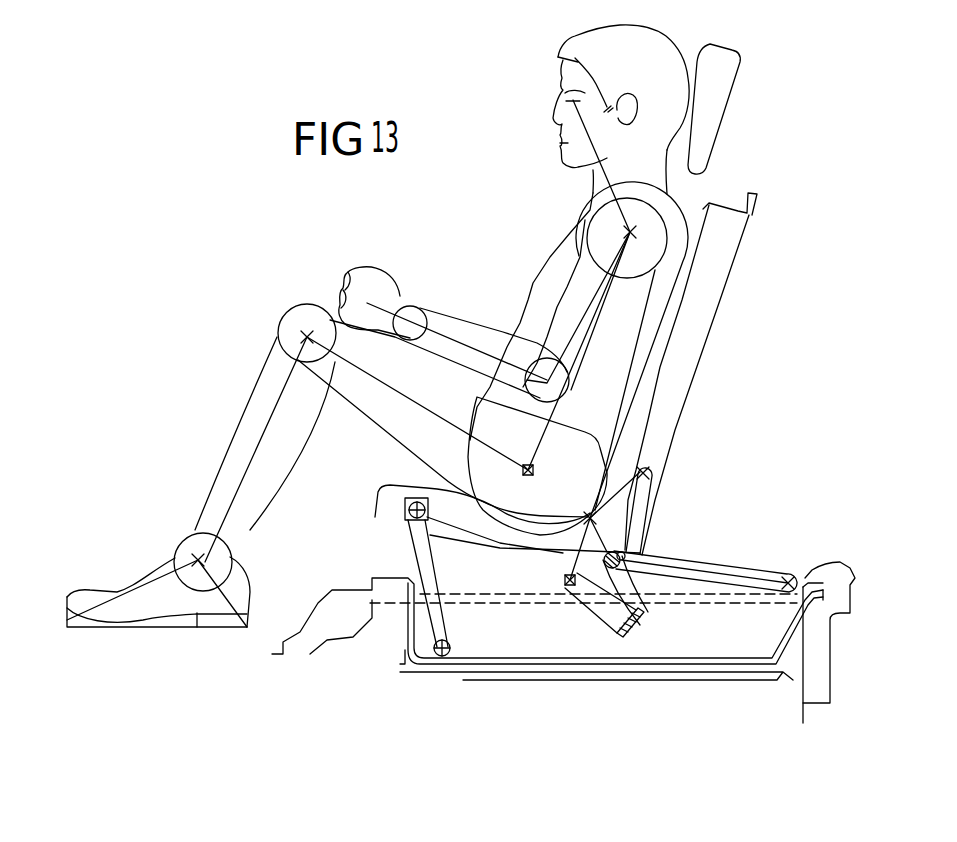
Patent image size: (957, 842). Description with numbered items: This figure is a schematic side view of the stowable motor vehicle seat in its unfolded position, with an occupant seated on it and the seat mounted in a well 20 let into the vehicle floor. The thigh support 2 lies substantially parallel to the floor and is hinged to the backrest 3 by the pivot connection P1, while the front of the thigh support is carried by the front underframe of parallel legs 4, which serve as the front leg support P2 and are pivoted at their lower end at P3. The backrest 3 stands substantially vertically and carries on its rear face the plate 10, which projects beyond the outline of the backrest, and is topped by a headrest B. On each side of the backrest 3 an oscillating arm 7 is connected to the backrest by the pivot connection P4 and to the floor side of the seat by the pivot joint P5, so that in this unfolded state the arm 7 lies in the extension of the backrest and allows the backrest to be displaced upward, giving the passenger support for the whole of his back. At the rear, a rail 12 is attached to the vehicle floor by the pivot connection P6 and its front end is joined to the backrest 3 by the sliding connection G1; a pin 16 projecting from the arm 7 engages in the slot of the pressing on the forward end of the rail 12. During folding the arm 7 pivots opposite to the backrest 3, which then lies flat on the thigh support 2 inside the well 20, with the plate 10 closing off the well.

The thigh support 2 is at (427, 487).
The backrest 3 is at (660, 343).
The legs 4 is at (418, 542).
The oscillating arm 7 is at (636, 546).
The plate 10 is at (737, 253).
The rail 12 is at (727, 570).
The pin 16 is at (645, 550).
The well 20 is at (375, 574).
The headrest B is at (703, 130).
The pivot connection P1 is at (593, 519).
The front leg support P2 is at (407, 512).
The pivot connection P3 is at (442, 656).
The pivot connection P4 is at (648, 472).
The pivot joint P5 is at (573, 588).
The pivot connection P6 is at (800, 586).
The sliding connection G1 is at (618, 570).